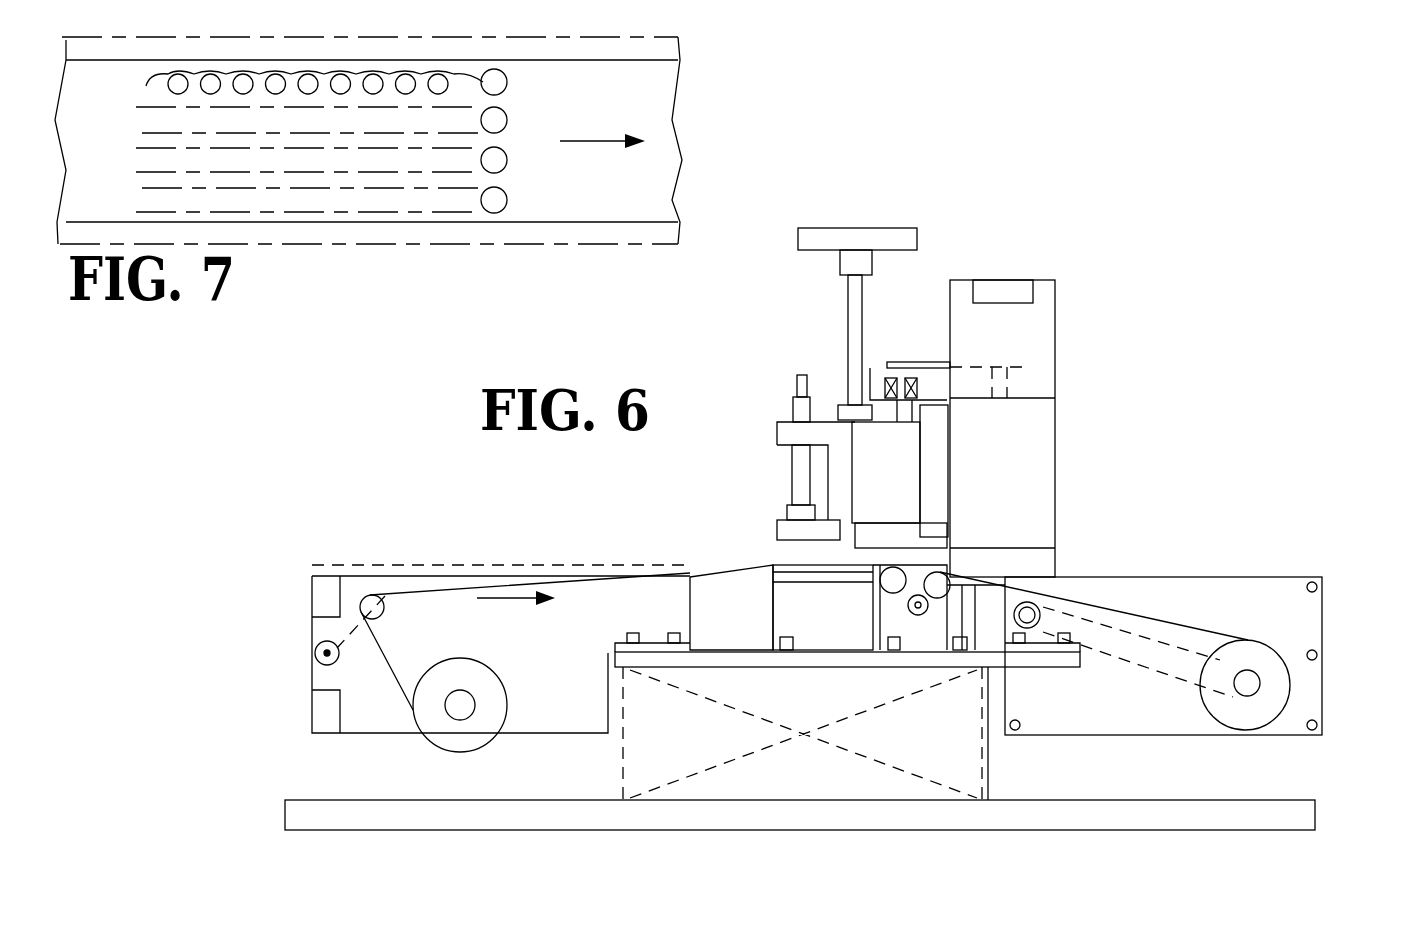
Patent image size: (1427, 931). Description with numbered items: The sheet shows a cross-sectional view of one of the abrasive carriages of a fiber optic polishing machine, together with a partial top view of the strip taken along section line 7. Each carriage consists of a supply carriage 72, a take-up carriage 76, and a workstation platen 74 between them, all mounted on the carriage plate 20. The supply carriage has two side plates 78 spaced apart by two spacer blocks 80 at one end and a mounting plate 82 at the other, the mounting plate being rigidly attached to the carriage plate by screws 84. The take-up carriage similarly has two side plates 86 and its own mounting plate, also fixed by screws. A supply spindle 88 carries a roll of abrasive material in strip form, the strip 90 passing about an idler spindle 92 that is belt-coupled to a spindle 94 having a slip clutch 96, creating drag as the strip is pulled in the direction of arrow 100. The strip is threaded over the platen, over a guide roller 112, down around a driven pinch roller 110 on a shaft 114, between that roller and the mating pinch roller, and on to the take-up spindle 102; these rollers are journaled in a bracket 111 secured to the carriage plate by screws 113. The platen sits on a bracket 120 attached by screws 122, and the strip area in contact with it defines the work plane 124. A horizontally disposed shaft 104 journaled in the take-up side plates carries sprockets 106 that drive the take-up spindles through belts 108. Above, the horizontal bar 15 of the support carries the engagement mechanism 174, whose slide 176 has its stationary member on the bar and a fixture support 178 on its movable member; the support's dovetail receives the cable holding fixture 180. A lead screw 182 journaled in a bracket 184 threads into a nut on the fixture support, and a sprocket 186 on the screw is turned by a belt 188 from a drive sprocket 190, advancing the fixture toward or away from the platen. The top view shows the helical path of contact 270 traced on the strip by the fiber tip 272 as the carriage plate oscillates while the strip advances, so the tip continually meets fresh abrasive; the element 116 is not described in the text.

In FIG. 6, the section line 7- 7 is at (650, 547).
In FIG. 6, the horizontal bar 15 is at (1040, 453).
In FIG. 6, the carriage plate 20 is at (747, 660).
In FIG. 6, the supply carriage 72 is at (353, 562).
In FIG. 6, the workstation platen 74 is at (790, 563).
In FIG. 6, the take-up carriage 76 is at (1167, 565).
In FIG. 6, the side plates 78 is at (548, 722).
In FIG. 6, the spacer blocks 80 is at (322, 603).
In FIG. 6, the mounting plate 82 is at (652, 637).
In FIG. 6, the screws 84 is at (615, 625).
In FIG. 6, the side plates 86 is at (1148, 715).
In FIG. 6, the supply spindle 88 is at (470, 705).
In FIG. 7, the abrasive material strip 90 is at (652, 187).
In FIG. 6, the abrasive material strip 90 is at (477, 590).
In FIG. 6, the idler spindle 92 is at (383, 612).
In FIG. 6, the spindle 94 is at (322, 665).
In FIG. 6, the slip clutch 96 is at (318, 642).
In FIG. 6, the arrow 100 is at (508, 577).
In FIG. 6, the take-up spindle 102 is at (1245, 692).
In FIG. 6, the shaft 104 is at (1090, 627).
In FIG. 6, the sprockets 106 is at (1047, 623).
In FIG. 6, the belt 108 is at (977, 580).
In FIG. 6, the pinch roller 110 is at (917, 616).
In FIG. 6, the bracket 111 is at (890, 608).
In FIG. 6, the guide roller 112 is at (882, 584).
In FIG. 6, the screws 113 is at (910, 614).
In FIG. 6, the shaft 114 is at (893, 643).
In FIG. 6, the support 116 is at (925, 672).
In FIG. 6, the bracket 120 is at (787, 600).
In FIG. 6, the screws 122 is at (787, 627).
In FIG. 6, the plane 124 is at (425, 565).
In FIG. 6, the engagement mechanism 174 is at (986, 256).
In FIG. 6, the slide 176 is at (933, 502).
In FIG. 6, the fixture support 178 is at (898, 470).
In FIG. 6, the cable holding fixture 180 is at (775, 432).
In FIG. 6, the lead screw 182 is at (903, 408).
In FIG. 6, the bracket 184 is at (933, 388).
In FIG. 6, the sprocket 186 is at (897, 362).
In FIG. 6, the belt 188 is at (935, 362).
In FIG. 6, the drive sprocket 190 is at (1020, 367).
In FIG. 7, the helical path of contact 270 is at (255, 72).
In FIG. 7, the tip of the optical fiber 272 is at (507, 85).